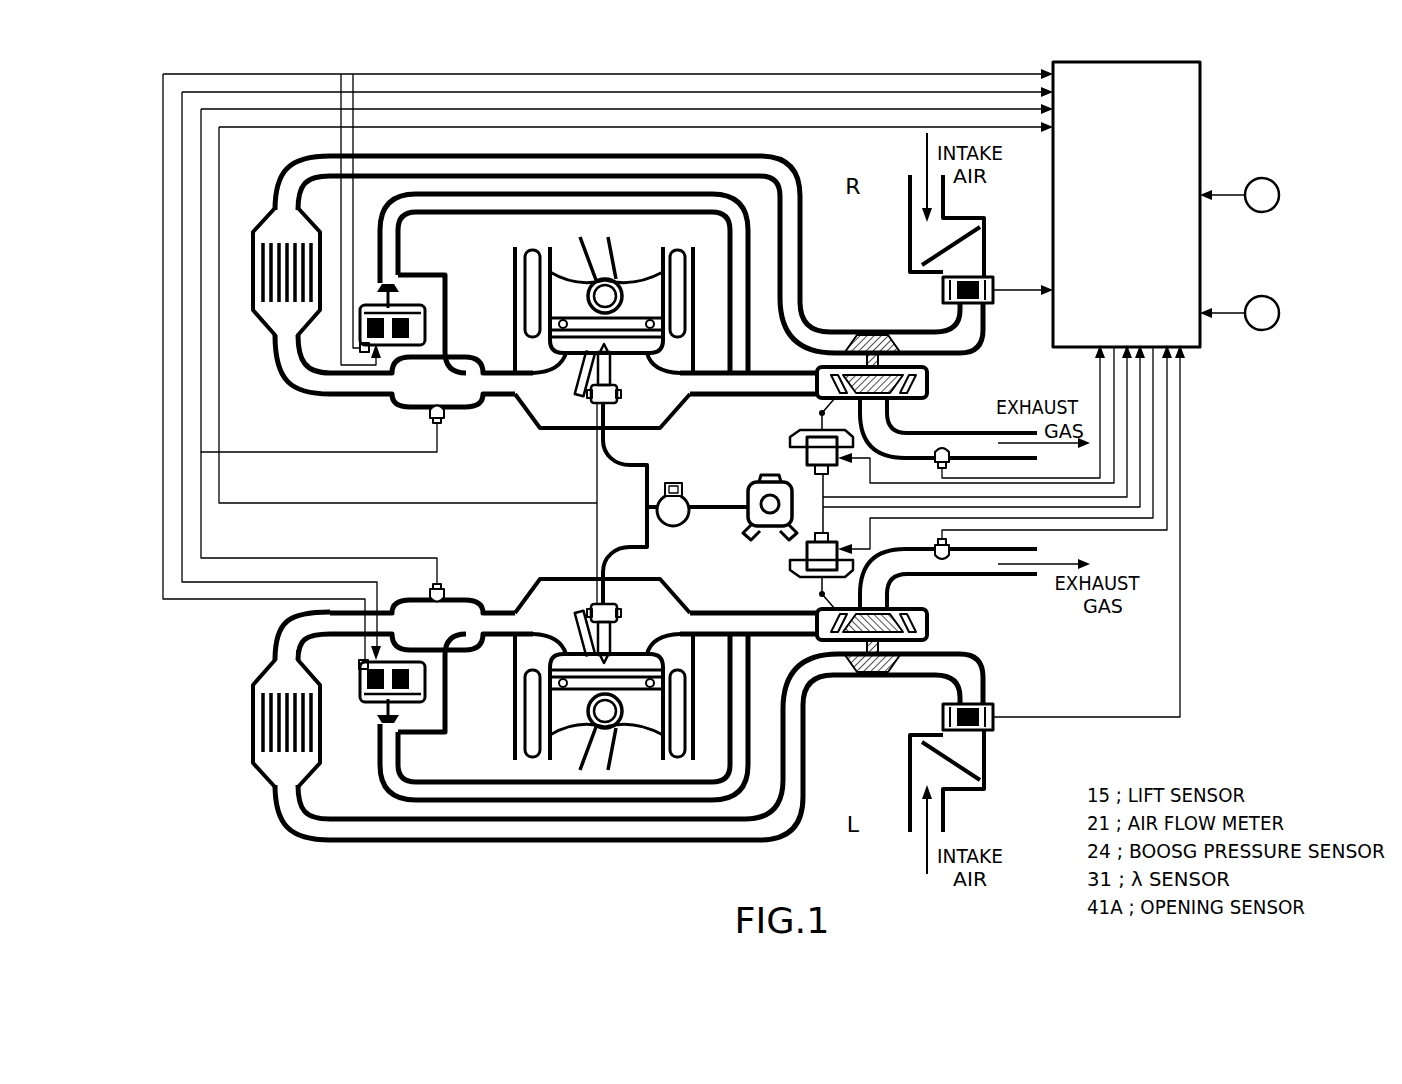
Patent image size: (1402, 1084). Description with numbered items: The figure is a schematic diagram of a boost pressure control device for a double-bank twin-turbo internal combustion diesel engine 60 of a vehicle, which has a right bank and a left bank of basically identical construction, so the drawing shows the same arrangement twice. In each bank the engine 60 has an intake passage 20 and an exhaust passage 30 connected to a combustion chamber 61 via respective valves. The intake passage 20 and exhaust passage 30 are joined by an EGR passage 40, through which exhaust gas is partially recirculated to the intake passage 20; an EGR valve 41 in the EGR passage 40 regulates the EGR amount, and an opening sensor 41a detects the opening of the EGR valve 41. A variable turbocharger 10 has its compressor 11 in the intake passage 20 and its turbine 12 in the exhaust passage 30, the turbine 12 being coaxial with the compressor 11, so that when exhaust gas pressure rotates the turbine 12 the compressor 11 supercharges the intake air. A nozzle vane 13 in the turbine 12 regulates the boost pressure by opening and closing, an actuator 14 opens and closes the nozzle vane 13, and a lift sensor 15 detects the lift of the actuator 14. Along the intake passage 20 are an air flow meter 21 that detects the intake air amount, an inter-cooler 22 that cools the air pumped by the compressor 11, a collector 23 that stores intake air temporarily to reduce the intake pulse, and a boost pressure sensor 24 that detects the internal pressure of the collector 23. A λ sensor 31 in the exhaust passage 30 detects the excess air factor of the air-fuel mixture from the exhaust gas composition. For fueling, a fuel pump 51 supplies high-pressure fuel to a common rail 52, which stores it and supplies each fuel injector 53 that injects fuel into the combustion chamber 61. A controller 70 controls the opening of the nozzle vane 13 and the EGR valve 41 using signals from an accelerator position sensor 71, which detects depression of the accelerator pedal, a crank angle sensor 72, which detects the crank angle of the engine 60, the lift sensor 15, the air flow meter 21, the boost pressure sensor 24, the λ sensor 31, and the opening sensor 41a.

The variable turbocharger 10 is at (884, 502).
The compressor 11 is at (875, 333).
The turbine 12 is at (905, 402).
The nozzle vane 13 is at (818, 413).
The actuator 14 is at (796, 448).
The lift sensor 15 is at (845, 522).
The intake passage 20 is at (582, 158).
The air flow meter 21 is at (995, 280).
The inter-cooler 22 is at (270, 312).
The collector 23 is at (472, 407).
The boost pressure sensor 24 is at (445, 422).
The exhaust passage 30 is at (712, 398).
The λ sensor 31 is at (933, 462).
The EGR passage 40 is at (469, 216).
The EGR valve 41 is at (360, 322).
The opening sensor 41a is at (374, 360).
The fuel pump 51 is at (750, 494).
The common rail 52 is at (675, 528).
The fuel injector 53 is at (590, 421).
The internal combustion diesel engine 60 is at (560, 431).
The combustion chamber 61 is at (680, 345).
The controller 70 is at (1200, 83).
The accelerator position sensor 71 is at (1262, 212).
The crank angle sensor 72 is at (1262, 330).